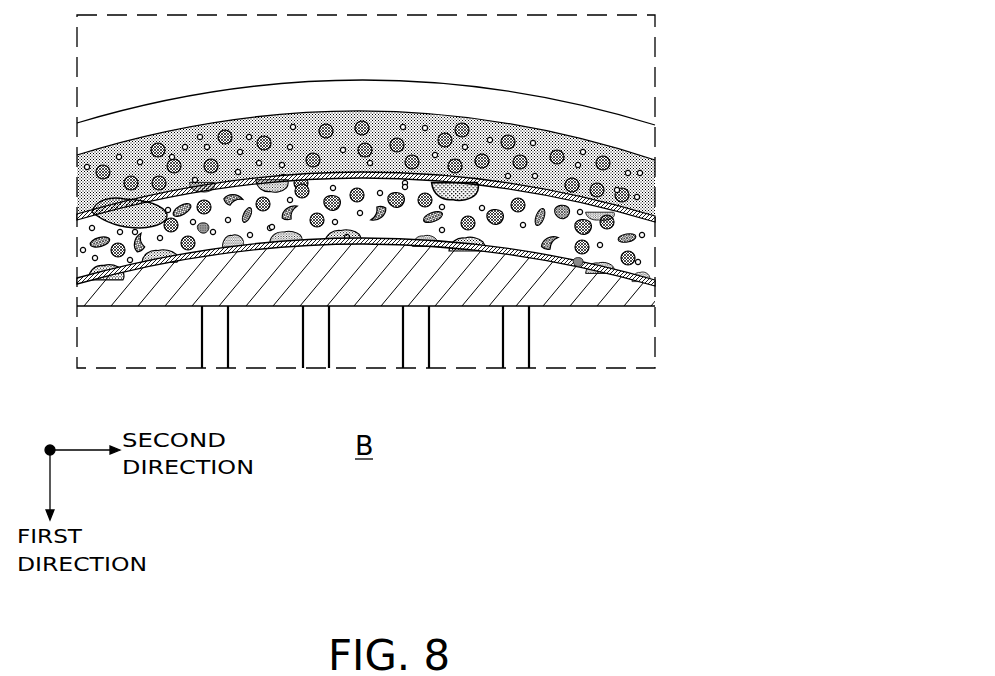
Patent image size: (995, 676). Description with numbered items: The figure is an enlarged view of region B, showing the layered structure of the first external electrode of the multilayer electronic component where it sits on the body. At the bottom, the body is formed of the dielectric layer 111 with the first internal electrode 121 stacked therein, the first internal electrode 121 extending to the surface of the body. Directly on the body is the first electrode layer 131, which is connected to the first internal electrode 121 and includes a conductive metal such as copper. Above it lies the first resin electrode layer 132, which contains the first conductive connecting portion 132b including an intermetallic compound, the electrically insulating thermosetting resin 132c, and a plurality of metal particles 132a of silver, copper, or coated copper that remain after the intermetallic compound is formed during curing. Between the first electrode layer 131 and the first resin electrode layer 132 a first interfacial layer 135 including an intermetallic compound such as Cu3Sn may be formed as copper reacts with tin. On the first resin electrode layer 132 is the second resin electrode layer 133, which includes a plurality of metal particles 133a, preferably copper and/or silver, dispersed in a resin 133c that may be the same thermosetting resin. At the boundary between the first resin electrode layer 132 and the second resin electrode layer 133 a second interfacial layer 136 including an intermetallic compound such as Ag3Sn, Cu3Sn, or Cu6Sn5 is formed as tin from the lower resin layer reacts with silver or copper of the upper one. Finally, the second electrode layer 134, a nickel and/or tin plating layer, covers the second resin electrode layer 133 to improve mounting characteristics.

The dielectric layer 111 is at (463, 348).
The first internal electrode 121 is at (523, 350).
The first electrode layer 131 is at (642, 293).
The first resin electrode layer 132 is at (437, 233).
The metal particles 132a is at (614, 221).
The first conductive connecting portion 132b is at (645, 245).
The resin 132c is at (655, 274).
The second resin electrode layer 133 is at (437, 166).
The metal particles 133a is at (617, 162).
The resin 133c is at (655, 190).
The second electrode layer 134 is at (650, 134).
The first interfacial layer 135 is at (578, 264).
The second interfacial layer 136 is at (92, 198).